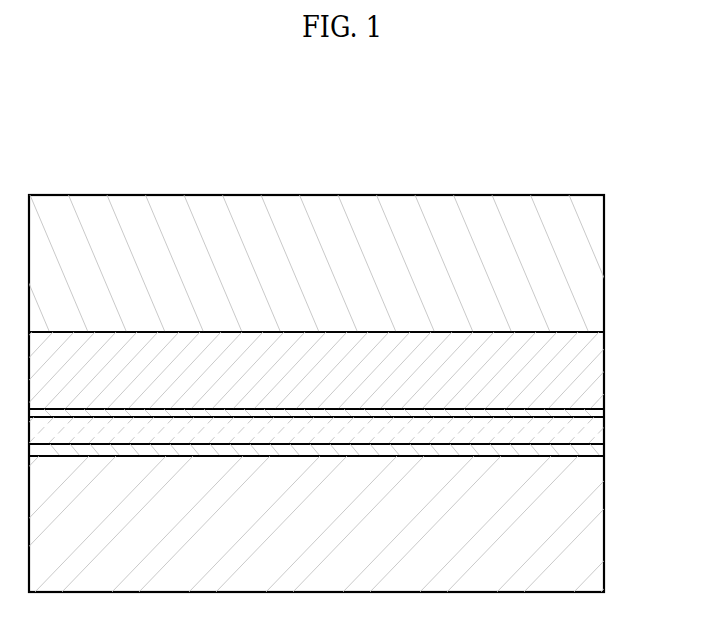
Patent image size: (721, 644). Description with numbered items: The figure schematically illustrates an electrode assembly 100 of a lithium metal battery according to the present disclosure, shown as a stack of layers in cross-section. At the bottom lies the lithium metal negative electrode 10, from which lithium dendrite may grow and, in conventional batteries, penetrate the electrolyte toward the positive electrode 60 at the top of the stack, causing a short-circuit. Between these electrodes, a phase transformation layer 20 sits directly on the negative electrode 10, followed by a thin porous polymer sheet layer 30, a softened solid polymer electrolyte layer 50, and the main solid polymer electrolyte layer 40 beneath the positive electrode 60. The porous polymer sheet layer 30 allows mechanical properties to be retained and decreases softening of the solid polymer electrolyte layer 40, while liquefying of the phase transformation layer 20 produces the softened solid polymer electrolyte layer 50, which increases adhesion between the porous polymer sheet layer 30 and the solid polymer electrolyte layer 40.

The electrode assembly 100 is at (175, 118).
The positive electrode 60 is at (604, 248).
The solid polymer electrolyte layer 40 is at (604, 364).
The softened solid polymer electrolyte layer 50 is at (604, 413).
The porous polymer sheet layer 30 is at (604, 427).
The phase transformation layer 20 is at (604, 447).
The lithium metal negative electrode 10 is at (604, 523).